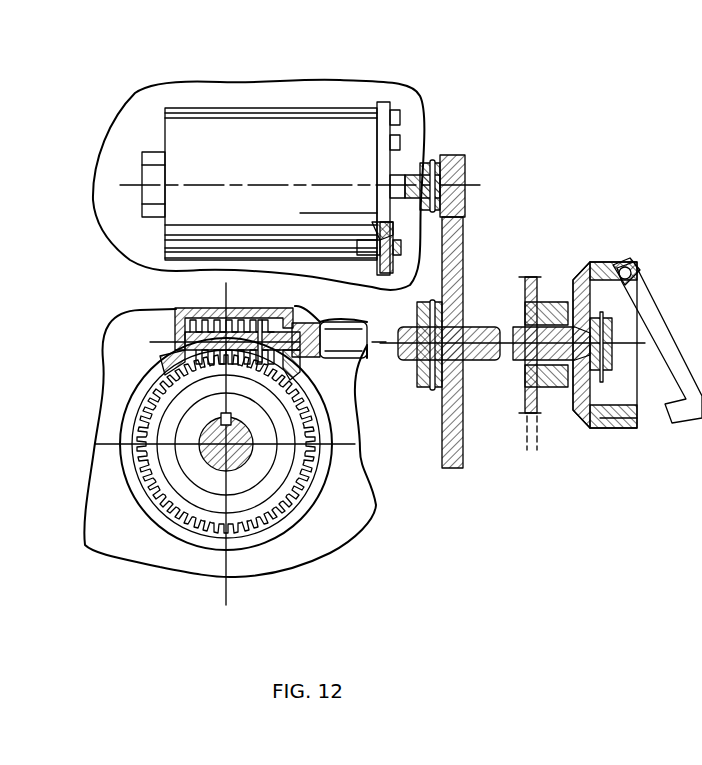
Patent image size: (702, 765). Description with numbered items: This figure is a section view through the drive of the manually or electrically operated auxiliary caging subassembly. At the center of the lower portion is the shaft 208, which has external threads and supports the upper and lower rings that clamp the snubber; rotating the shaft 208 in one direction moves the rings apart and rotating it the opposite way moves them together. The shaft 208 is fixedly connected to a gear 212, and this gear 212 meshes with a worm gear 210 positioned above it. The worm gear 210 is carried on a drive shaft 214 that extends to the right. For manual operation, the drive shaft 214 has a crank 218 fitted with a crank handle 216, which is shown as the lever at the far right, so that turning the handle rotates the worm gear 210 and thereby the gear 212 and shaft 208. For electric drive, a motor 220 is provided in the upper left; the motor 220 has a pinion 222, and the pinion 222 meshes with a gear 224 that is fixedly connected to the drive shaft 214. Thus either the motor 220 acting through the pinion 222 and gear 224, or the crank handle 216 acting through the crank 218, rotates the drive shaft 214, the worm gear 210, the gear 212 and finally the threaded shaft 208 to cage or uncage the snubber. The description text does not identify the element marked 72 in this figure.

The motor 220 is at (248, 120).
The pinion 222 is at (465, 168).
The gear 224 is at (462, 468).
The drive shaft 214 is at (483, 325).
The crank handle 216 is at (652, 290).
The crank 218 is at (585, 428).
The worm gear 210 is at (200, 310).
The gear 212 is at (190, 422).
The shaft 208 is at (138, 508).
The shaft bore 72 is at (256, 418).